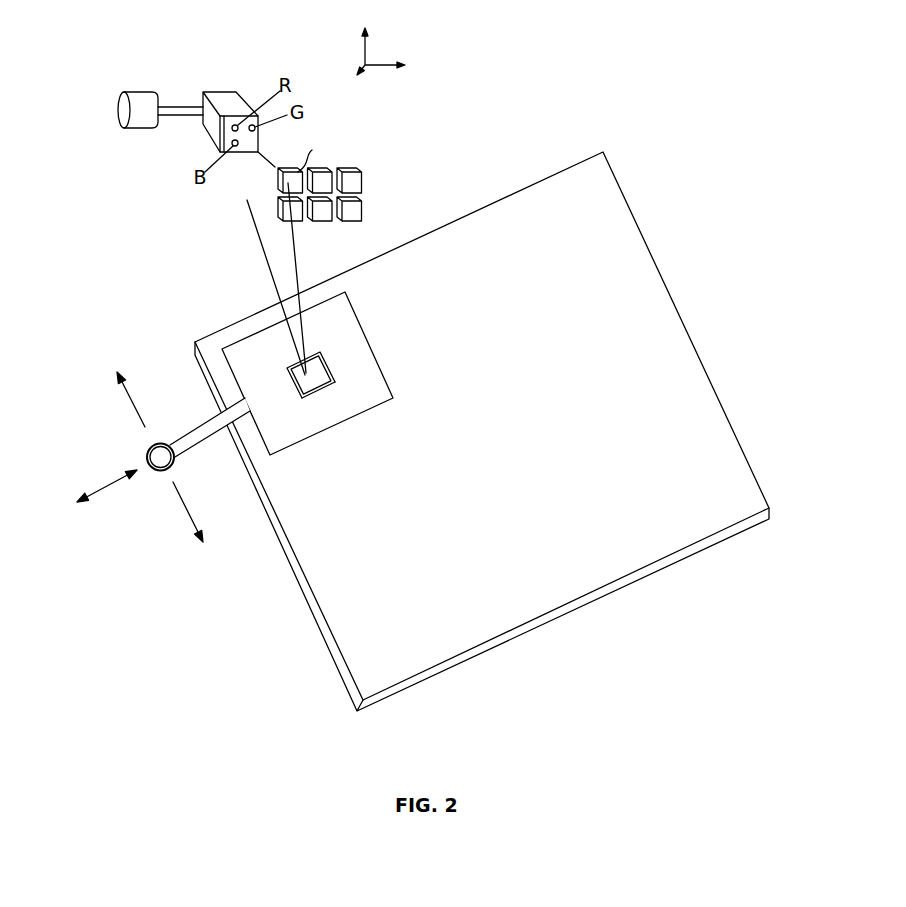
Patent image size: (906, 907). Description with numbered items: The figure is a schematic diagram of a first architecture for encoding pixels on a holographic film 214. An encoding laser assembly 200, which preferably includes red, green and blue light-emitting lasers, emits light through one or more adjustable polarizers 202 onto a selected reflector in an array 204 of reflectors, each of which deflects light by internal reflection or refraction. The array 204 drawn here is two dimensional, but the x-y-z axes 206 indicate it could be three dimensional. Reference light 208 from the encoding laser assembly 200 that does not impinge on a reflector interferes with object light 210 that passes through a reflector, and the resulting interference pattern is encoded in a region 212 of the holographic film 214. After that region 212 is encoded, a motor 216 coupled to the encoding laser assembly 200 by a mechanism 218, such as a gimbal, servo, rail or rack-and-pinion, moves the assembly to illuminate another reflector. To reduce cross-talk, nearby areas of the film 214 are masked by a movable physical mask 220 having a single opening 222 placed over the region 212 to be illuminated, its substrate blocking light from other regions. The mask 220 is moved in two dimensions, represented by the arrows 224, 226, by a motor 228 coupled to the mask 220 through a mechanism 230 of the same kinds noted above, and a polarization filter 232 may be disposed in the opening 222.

The encoding laser assembly 200 is at (223, 97).
The adjustable polarizer 202 is at (223, 144).
The array of reflectors 204 is at (380, 196).
The x-y-z axes 206 is at (404, 36).
The reference light 208 is at (260, 243).
The object light 210 is at (298, 277).
The region of holographic film 212 is at (323, 375).
The holographic film 214 is at (680, 368).
The motor 216 is at (124, 108).
The mechanism 218 is at (177, 107).
The movable physical mask 220 is at (277, 342).
The opening 222 is at (320, 390).
The arrow 224 is at (133, 412).
The arrow 226 is at (78, 498).
The motor 228 is at (160, 444).
The mechanism 230 is at (200, 447).
The polarization filter 232 is at (320, 358).